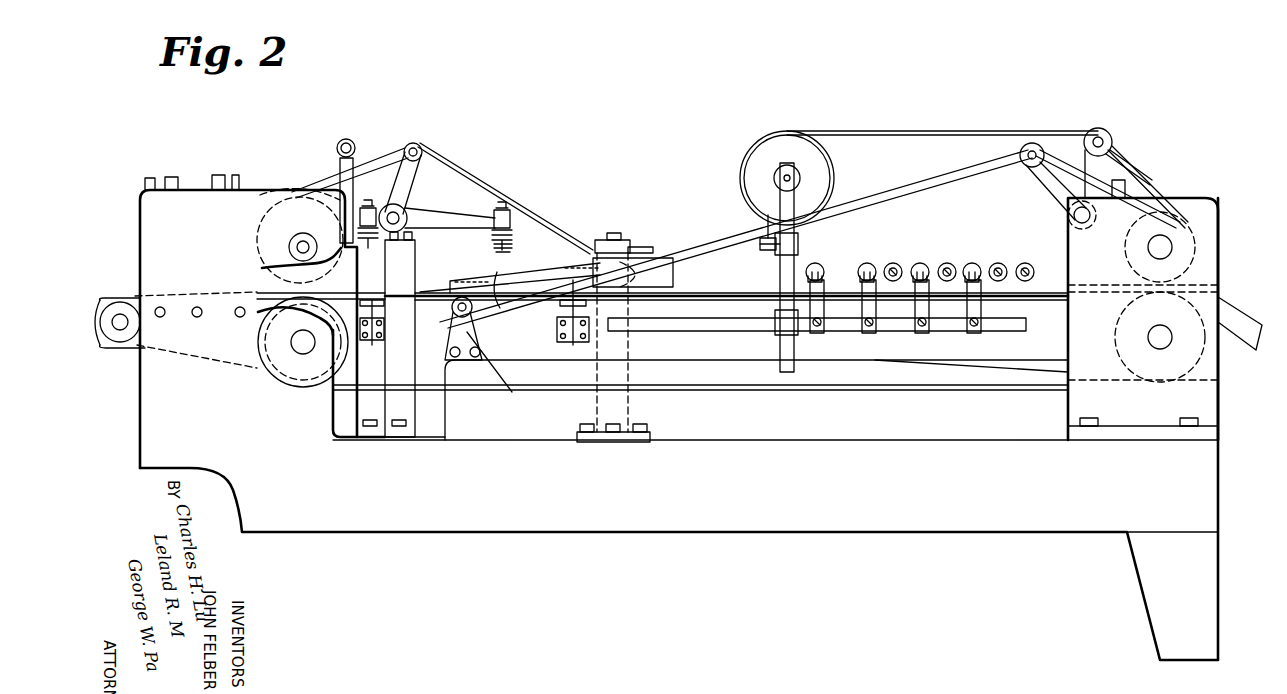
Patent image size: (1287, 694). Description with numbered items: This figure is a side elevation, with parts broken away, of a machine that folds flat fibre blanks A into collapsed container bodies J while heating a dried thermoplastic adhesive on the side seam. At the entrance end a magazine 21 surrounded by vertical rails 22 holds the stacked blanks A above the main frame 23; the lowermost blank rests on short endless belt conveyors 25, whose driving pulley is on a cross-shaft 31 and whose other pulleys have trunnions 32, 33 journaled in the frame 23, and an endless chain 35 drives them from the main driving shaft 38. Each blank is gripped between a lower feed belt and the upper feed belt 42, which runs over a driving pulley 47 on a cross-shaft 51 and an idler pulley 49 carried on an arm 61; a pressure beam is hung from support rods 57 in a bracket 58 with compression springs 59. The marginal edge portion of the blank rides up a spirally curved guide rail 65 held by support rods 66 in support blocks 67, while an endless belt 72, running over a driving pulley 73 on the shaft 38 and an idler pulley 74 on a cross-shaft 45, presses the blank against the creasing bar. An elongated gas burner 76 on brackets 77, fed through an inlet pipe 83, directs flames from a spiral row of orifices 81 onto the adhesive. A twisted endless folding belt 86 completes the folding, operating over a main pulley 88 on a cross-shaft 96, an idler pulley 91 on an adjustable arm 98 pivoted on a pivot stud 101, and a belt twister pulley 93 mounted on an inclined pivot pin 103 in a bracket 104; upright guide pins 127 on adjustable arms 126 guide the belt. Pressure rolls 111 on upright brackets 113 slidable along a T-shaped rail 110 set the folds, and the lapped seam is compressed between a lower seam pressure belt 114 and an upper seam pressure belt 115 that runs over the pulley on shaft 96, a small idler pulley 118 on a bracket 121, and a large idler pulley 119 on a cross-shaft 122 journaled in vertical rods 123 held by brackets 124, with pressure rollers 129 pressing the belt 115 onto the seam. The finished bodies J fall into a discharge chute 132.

The magazine 21 is at (222, 177).
The rails 22 is at (166, 178).
The frame 23 is at (727, 526).
The endless belt conveyors 25 is at (140, 298).
The cross-shaft 31 is at (138, 298).
The trunnion 32 is at (238, 317).
The trunnions 33 is at (193, 316).
The endless chain 35 is at (135, 350).
The main driving shaft 38 is at (300, 345).
The upper feed belt 42 is at (490, 190).
The cross-shaft 45 is at (1160, 338).
The driving pulley 47 is at (276, 222).
The idler pulley 49 is at (416, 146).
The cross-shaft 51 is at (303, 247).
The support rods 57 is at (367, 206).
The bracket 58 is at (448, 220).
The compression springs 59 is at (512, 244).
The arm 61 is at (412, 184).
The spirally curved guide rail 65 is at (508, 303).
The support rods 66 is at (378, 302).
The support blocks 67 is at (384, 326).
The endless belt 72 is at (853, 387).
The driving pulley 73 is at (345, 360).
The idler pulley 74 is at (1118, 316).
The gas burner 76 is at (546, 255).
The brackets 77 is at (365, 372).
The orifices 81 is at (466, 280).
The inlet pipe 83 is at (340, 168).
The twisted endless folding belt 86 is at (935, 178).
The main pulley 88 is at (1125, 250).
The idler pulley 91 is at (1025, 162).
The belt twister pulley 93 is at (452, 308).
The cross-shaft 96 is at (1165, 245).
The adjustable arm 98 is at (1055, 186).
The pivot stud 101 is at (1072, 216).
The inclined pivot pin 103 is at (478, 330).
The bracket 104 is at (502, 380).
The T-shaped rail 110 is at (890, 330).
The pressure rolls 111 is at (826, 268).
The upright brackets 113 is at (868, 298).
The lower seam pressure belt 114 is at (1004, 372).
The upper seam pressure belt 115 is at (907, 130).
The small idler pulley 118 is at (1106, 135).
The large idler pulley 119 is at (815, 184).
The bracket 121 is at (1108, 158).
The cross-shaft 122 is at (797, 174).
The vertical rods 123 is at (792, 200).
The brackets 124 is at (777, 322).
The adjustable arms 126 is at (772, 245).
The guide pins 127 is at (762, 226).
The pressure rollers 129 is at (892, 262).
The discharge chute 132 is at (1250, 332).
The fibre blank A is at (270, 292).
The collapsed container body J is at (1224, 290).